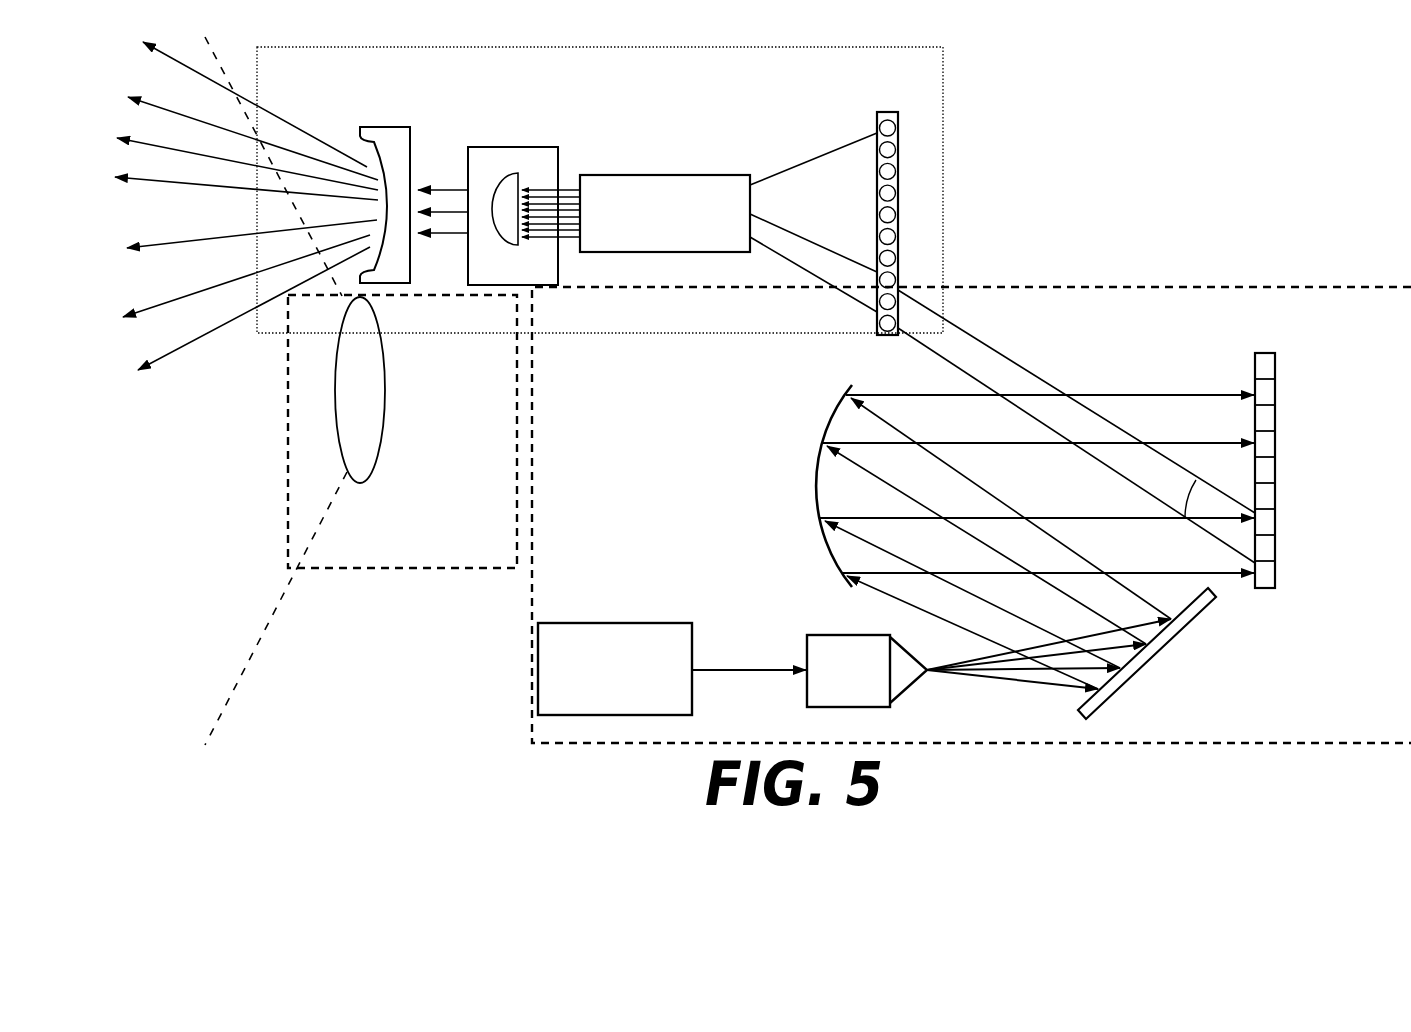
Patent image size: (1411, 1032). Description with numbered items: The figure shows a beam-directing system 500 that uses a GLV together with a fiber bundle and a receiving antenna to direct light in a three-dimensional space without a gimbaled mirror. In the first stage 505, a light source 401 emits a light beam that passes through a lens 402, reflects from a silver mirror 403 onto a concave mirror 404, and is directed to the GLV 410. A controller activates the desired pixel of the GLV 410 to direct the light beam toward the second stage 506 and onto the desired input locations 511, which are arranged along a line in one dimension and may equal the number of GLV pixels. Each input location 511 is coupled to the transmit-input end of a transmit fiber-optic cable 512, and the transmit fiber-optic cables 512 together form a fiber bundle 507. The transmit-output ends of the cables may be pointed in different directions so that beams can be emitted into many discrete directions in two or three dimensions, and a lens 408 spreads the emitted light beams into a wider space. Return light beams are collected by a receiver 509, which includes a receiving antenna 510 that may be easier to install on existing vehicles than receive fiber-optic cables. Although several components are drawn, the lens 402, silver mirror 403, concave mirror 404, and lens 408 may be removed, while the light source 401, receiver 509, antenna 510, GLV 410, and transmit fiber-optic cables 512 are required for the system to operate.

The beam-directing system 500 is at (1205, 73).
The first stage 505 is at (971, 515).
The second stage 506 is at (815, 105).
The light source 401 is at (630, 706).
The lens 402 is at (865, 695).
The silver mirror 403 is at (1230, 740).
The concave mirror 404 is at (818, 520).
The GLV 410 is at (1101, 470).
The fiber bundle 507 is at (665, 240).
The input locations 511 is at (907, 223).
The transmit fiber-optic cables 512 is at (1002, 348).
The lens 408 is at (400, 116).
The receiver 509 is at (458, 525).
The receiving antenna 510 is at (378, 396).